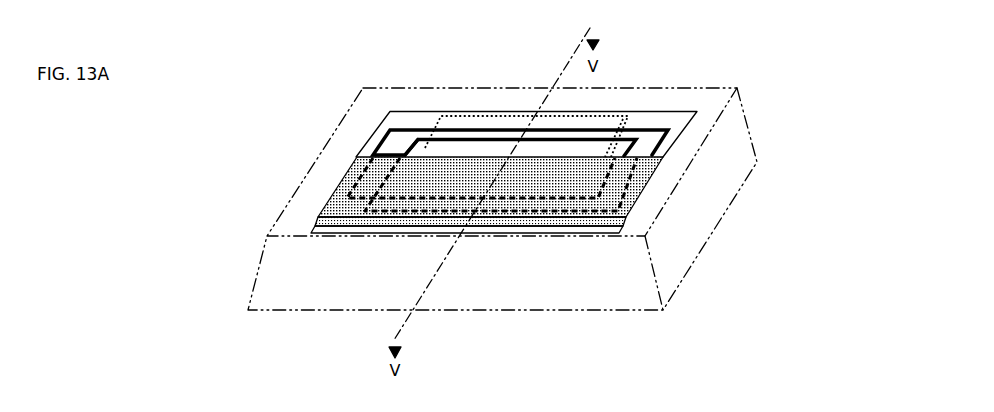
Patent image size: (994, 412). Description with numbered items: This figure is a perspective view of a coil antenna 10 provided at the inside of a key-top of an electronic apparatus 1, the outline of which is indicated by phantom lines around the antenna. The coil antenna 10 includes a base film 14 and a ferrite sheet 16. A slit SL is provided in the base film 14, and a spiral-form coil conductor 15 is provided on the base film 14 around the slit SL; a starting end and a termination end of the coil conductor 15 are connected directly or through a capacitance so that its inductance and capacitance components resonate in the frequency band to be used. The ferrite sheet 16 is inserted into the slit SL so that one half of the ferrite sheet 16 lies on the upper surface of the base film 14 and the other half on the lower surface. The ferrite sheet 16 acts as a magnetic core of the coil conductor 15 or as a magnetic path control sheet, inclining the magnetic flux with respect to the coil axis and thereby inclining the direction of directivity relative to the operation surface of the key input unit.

The electronic device 1 is at (742, 87).
The coil antenna 10 is at (357, 128).
The base film 14 is at (677, 118).
The coil conductor 15 is at (497, 128).
The ferrite sheet 16 is at (331, 208).
The slit SL is at (412, 149).